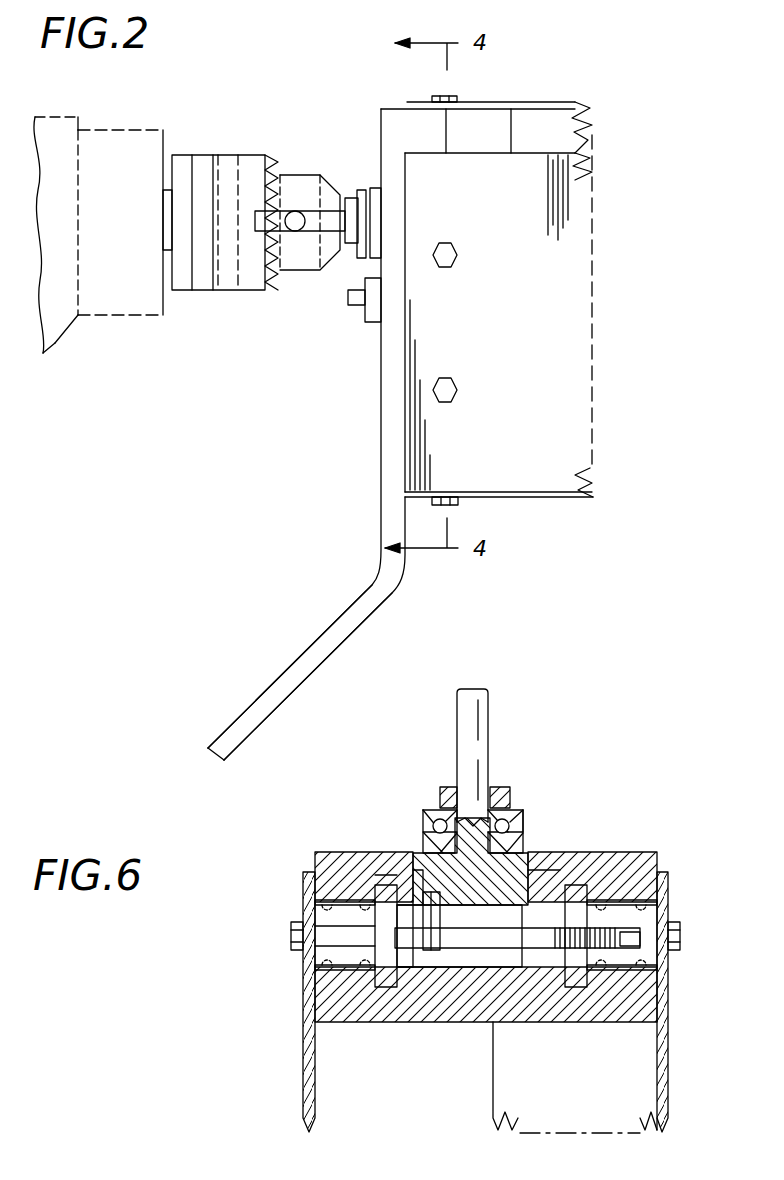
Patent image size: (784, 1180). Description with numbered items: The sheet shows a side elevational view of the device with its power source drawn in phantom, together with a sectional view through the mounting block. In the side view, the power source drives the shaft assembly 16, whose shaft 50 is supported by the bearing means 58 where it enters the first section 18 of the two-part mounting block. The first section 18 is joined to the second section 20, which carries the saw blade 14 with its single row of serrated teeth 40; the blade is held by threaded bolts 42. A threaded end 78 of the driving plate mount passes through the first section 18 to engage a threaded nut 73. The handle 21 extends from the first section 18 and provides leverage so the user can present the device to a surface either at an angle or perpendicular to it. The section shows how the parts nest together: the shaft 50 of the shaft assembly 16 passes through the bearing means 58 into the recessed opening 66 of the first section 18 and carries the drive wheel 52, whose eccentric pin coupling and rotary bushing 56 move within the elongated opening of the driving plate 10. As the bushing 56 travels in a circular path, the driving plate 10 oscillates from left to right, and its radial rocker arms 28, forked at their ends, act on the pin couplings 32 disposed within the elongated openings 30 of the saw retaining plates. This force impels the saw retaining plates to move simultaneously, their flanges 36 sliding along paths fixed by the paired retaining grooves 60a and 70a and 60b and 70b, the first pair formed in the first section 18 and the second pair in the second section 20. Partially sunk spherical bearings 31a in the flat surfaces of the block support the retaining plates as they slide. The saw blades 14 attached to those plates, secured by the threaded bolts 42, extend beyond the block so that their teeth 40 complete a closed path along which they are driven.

In FIG. 6, the driving plate 10 is at (460, 942).
In FIG. 2, the saw blade 14 is at (550, 470).
In FIG. 6, the saw blade 14 is at (303, 1090).
In FIG. 6, the shaft assembly 16 is at (475, 740).
In FIG. 2, the first section 18 is at (387, 108).
In FIG. 6, the first section 18 is at (314, 856).
In FIG. 2, the second section 20 is at (478, 135).
In FIG. 6, the second section 20 is at (518, 1005).
In FIG. 2, the handle 21 is at (280, 682).
In FIG. 6, the radial rocker arm 28 is at (497, 942).
In FIG. 6, the elongated opening 30 is at (628, 943).
In FIG. 6, the partially sunk spherical bearing 31a is at (365, 904).
In FIG. 6, the pin coupling 32 is at (610, 934).
In FIG. 6, the flange 36 is at (386, 900).
In FIG. 2, the serrated teeth 40 is at (588, 165).
In FIG. 6, the serrated teeth 40 is at (668, 1125).
In FIG. 2, the threaded bolt 42 is at (455, 96).
In FIG. 6, the threaded bolt 42 is at (291, 934).
In FIG. 2, the shaft 50 is at (310, 228).
In FIG. 6, the shaft 50 is at (472, 713).
In FIG. 6, the drive wheel 52 is at (520, 862).
In FIG. 6, the bushing 56 is at (425, 938).
In FIG. 2, the bearing means 58 is at (361, 190).
In FIG. 6, the bearing means 58 is at (508, 800).
In FIG. 6, the retaining groove 60a is at (560, 870).
In FIG. 6, the retaining groove 60b is at (383, 878).
In FIG. 6, the recessed opening 66 is at (408, 870).
In FIG. 6, the retaining groove 70a is at (580, 987).
In FIG. 6, the retaining groove 70b is at (385, 987).
In FIG. 2, the threaded nut 73 is at (373, 302).
In FIG. 2, the threaded end 78 is at (352, 305).